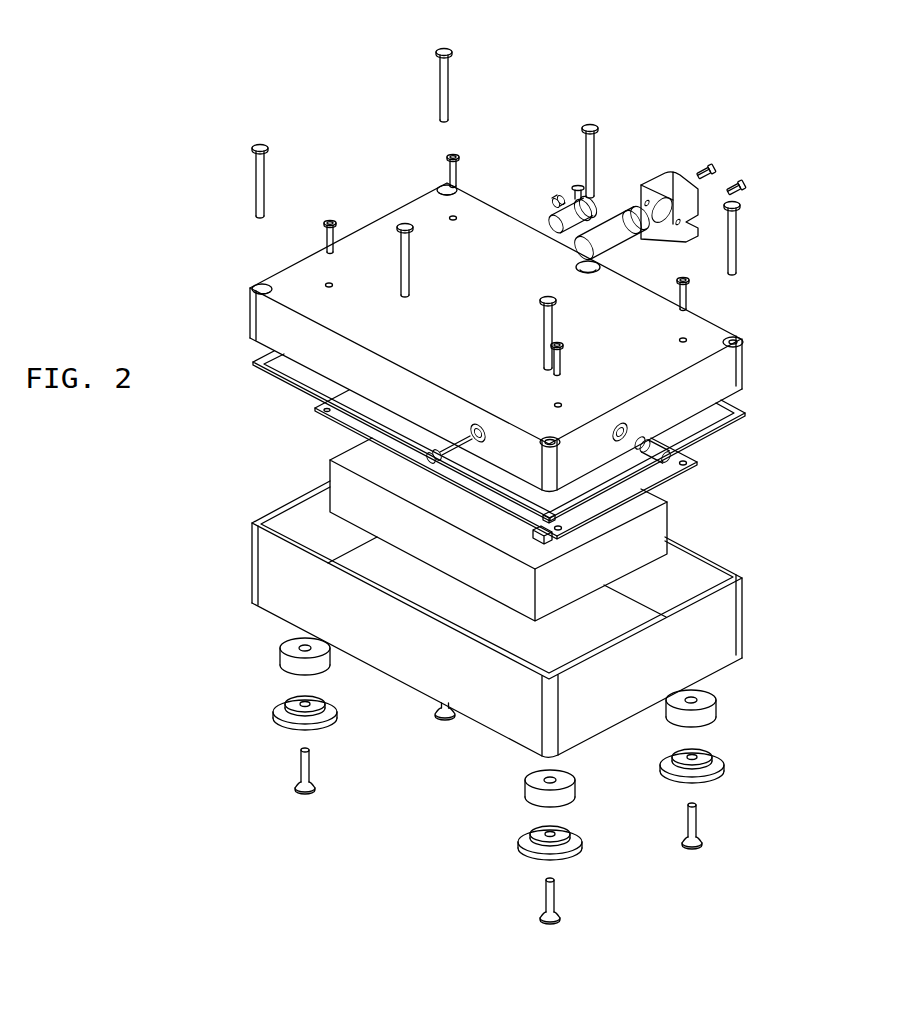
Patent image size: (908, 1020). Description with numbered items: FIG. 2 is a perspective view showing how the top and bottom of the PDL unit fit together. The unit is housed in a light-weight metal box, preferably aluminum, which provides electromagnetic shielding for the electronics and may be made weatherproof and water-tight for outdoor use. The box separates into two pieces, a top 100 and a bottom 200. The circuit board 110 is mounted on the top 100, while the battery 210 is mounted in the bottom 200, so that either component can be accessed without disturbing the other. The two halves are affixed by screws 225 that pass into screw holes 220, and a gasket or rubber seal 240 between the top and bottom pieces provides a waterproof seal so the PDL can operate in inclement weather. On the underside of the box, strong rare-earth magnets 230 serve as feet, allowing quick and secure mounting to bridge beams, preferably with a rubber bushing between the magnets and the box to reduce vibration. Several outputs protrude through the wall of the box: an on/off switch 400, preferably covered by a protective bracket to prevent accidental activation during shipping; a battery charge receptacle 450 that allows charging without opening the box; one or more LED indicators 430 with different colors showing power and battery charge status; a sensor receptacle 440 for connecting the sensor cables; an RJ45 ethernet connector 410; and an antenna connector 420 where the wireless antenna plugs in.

The top 100 is at (685, 395).
The circuit board 110 is at (662, 478).
The bottom 200 is at (693, 647).
The battery 210 is at (568, 588).
The screw holes 220 is at (733, 342).
The screws 225 is at (733, 205).
The rare-earth magnets 230 is at (698, 768).
The gasket or rubber seal 240 is at (718, 428).
The on/off switch 400 is at (632, 223).
The RJ45 ethernet connector 410 is at (540, 537).
The antenna connector 420 is at (432, 458).
The LED indicators 430 is at (559, 199).
The sensor receptacle 440 is at (655, 452).
The battery charge receptacle 450 is at (581, 213).